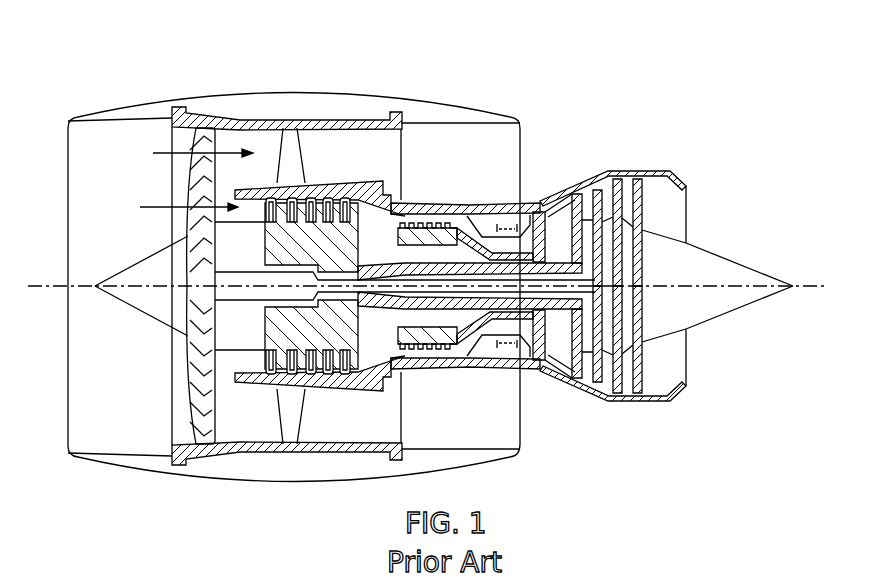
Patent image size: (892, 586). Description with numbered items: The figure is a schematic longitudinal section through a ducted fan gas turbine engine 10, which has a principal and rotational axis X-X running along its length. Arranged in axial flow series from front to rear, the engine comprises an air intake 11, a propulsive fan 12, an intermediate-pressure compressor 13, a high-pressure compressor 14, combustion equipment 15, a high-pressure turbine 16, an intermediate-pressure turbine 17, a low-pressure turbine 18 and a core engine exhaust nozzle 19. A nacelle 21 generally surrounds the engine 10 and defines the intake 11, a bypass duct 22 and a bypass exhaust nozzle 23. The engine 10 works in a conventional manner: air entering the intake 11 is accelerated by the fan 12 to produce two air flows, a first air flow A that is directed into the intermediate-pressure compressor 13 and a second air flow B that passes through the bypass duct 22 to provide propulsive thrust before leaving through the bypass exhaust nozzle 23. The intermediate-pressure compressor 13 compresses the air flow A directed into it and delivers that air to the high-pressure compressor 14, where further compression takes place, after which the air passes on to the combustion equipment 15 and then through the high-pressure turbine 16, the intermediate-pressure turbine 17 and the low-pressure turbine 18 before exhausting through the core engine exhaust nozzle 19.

The ducted fan gas turbine engine 10 is at (428, 246).
The air intake 11 is at (118, 121).
The propulsive fan 12 is at (191, 404).
The intermediate-pressure compressor 13 is at (330, 371).
The high-pressure compressor 14 is at (434, 212).
The combustion equipment 15 is at (480, 368).
The high-pressure turbine 16 is at (535, 368).
The intermediate-pressure turbine 17 is at (578, 196).
The low-pressure turbine 18 is at (592, 388).
The core engine exhaust nozzle 19 is at (676, 172).
The nacelle 21 is at (334, 103).
The bypass duct 22 is at (478, 160).
The bypass exhaust nozzle 23 is at (518, 113).